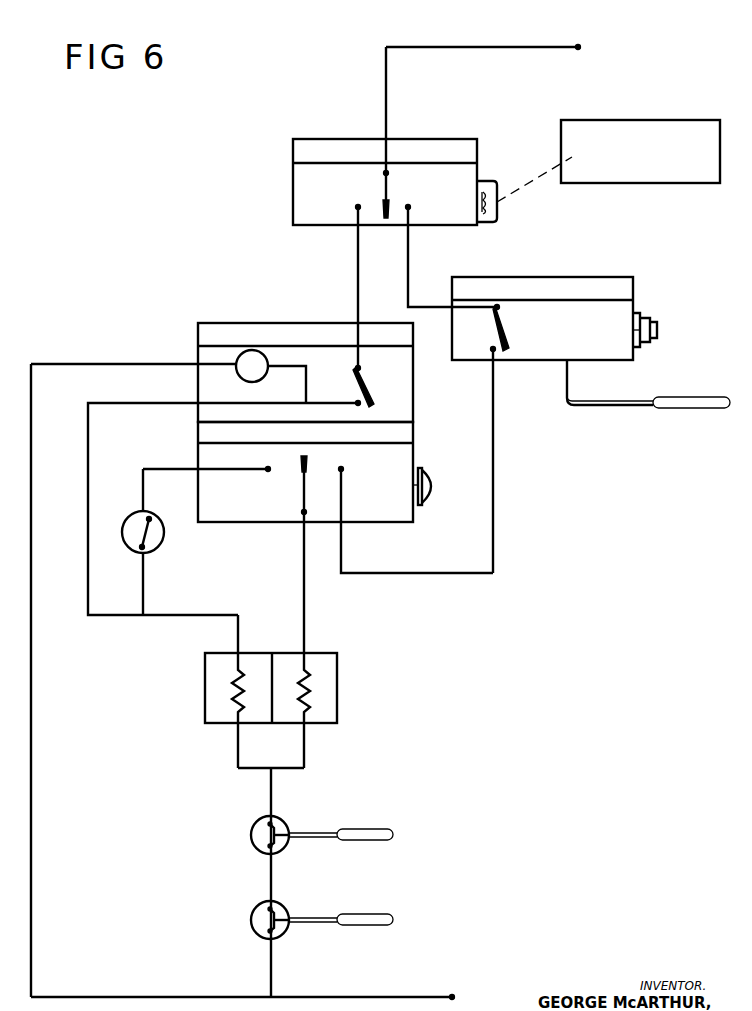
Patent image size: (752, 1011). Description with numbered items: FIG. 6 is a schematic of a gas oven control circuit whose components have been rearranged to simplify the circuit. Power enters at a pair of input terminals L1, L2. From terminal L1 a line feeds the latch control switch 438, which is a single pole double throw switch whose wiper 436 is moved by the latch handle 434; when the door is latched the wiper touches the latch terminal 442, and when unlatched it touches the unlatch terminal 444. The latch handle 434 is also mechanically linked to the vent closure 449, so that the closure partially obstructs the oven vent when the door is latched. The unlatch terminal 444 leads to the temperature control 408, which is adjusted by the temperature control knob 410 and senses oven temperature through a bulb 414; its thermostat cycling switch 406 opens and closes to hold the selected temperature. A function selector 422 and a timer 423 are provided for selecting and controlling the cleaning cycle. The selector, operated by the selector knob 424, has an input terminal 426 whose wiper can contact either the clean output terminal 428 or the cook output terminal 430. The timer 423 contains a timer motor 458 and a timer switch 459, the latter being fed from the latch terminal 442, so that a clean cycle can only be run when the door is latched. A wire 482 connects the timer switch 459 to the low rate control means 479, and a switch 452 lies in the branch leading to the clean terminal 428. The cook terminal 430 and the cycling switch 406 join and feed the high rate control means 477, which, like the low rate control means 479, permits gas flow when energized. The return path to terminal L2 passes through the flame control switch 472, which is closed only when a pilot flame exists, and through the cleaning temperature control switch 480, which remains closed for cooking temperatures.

The power input terminal L1 is at (578, 47).
The power input terminal L2 is at (452, 997).
The thermostat cycling switch 406 is at (505, 333).
The temperature control 408 is at (608, 277).
The temperature control knob 410 is at (658, 327).
The bulb 414 is at (700, 406).
The function selector 422 is at (398, 480).
The timer 423 is at (212, 323).
The selector knob 424 is at (432, 494).
The input terminal 426 is at (304, 490).
The clean output terminal 428 is at (268, 472).
The cook output terminal 430 is at (343, 472).
The latch handle 434 is at (492, 182).
The wiper 436 is at (386, 192).
The latch control switch 438 is at (292, 170).
The latch terminal 442 is at (358, 226).
The unlatch terminal 444 is at (408, 226).
The vent closure 449 is at (680, 128).
The switch 452 is at (128, 519).
The timer motor 458 is at (236, 358).
The timer switch 459 is at (374, 394).
The flame control switch 472 is at (252, 823).
The high rate control means 477 is at (320, 700).
The low rate control means 479 is at (218, 692).
The cleaning temperature control switch 480 is at (252, 928).
The wire 482 is at (88, 498).